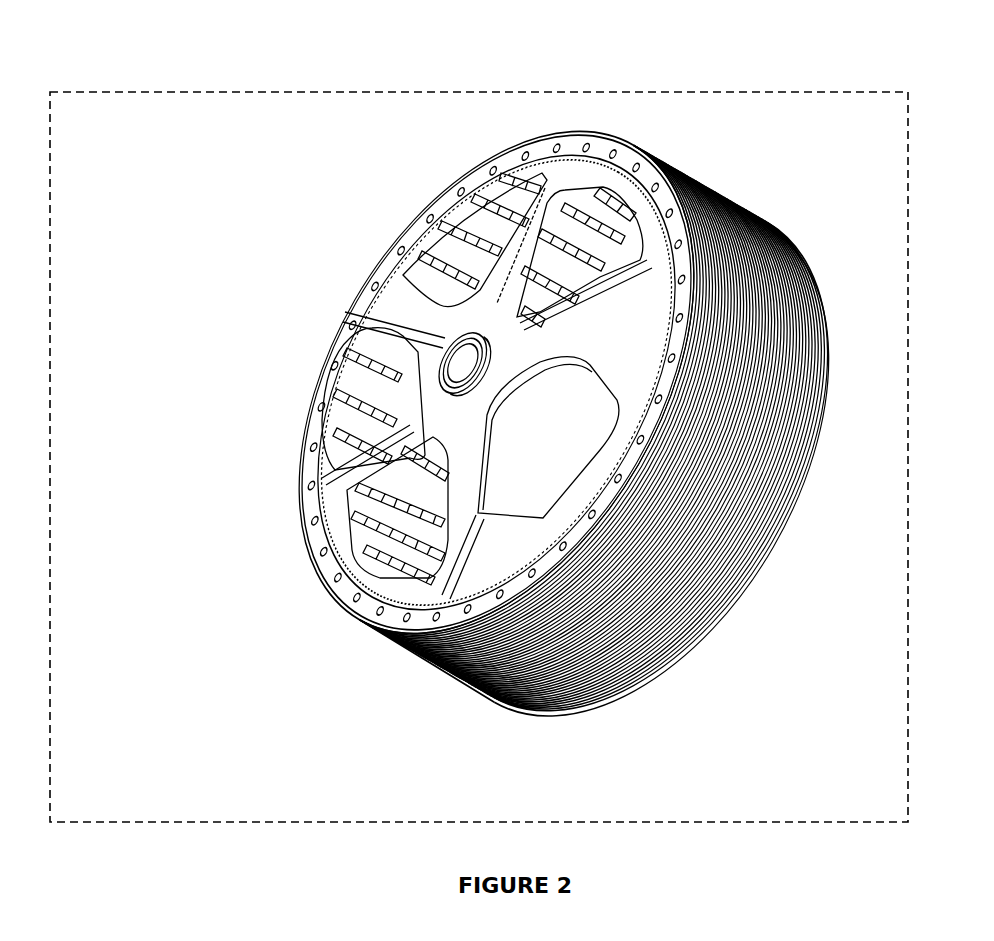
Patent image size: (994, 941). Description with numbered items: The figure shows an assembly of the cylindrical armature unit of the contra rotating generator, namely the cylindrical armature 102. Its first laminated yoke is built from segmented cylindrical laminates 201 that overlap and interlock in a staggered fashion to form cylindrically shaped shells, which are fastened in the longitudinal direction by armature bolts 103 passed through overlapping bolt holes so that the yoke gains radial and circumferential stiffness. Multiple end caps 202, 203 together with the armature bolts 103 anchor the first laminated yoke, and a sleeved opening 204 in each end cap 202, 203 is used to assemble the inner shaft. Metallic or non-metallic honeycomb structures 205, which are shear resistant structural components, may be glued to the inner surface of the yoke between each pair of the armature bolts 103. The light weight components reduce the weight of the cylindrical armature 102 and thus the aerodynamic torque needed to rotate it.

The cylindrical armature 102 is at (388, 92).
The armature bolts 103 is at (397, 243).
The segmented cylindrical laminates 201 is at (778, 357).
The end cap 202 is at (437, 335).
The end cap 203 is at (573, 407).
The sleeved opening 204 is at (448, 382).
The honeycomb structures 205 is at (392, 472).